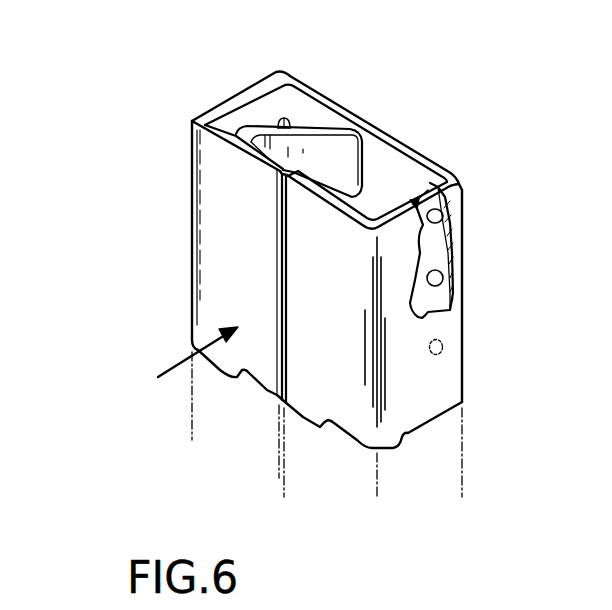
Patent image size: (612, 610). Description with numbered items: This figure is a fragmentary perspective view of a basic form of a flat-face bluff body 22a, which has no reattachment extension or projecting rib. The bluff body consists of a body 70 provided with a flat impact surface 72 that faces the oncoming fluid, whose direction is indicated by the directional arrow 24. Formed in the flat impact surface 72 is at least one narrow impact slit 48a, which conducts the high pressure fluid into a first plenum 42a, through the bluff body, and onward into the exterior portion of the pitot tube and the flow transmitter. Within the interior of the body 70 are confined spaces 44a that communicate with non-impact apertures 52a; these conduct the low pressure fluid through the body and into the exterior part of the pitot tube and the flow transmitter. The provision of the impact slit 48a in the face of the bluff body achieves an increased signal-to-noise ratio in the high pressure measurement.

The bluff body 22a is at (153, 119).
The body 70 is at (244, 89).
The confined spaces 44a is at (272, 103).
The first plenum 42a is at (333, 155).
The non-impact apertures 52a is at (276, 124).
The flat impact surface 72 is at (252, 258).
The impact slit 48a is at (282, 297).
The directional arrow 24 is at (163, 368).